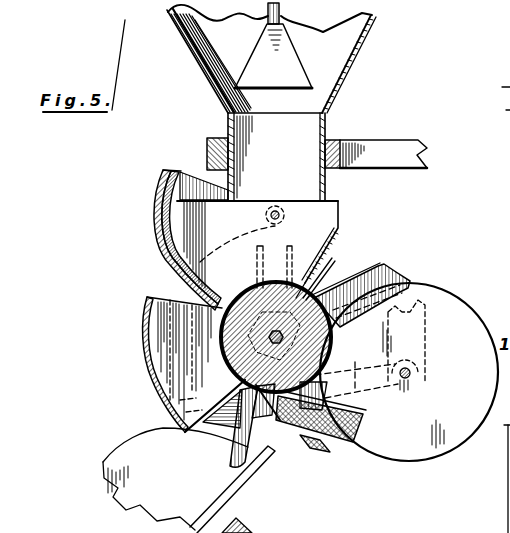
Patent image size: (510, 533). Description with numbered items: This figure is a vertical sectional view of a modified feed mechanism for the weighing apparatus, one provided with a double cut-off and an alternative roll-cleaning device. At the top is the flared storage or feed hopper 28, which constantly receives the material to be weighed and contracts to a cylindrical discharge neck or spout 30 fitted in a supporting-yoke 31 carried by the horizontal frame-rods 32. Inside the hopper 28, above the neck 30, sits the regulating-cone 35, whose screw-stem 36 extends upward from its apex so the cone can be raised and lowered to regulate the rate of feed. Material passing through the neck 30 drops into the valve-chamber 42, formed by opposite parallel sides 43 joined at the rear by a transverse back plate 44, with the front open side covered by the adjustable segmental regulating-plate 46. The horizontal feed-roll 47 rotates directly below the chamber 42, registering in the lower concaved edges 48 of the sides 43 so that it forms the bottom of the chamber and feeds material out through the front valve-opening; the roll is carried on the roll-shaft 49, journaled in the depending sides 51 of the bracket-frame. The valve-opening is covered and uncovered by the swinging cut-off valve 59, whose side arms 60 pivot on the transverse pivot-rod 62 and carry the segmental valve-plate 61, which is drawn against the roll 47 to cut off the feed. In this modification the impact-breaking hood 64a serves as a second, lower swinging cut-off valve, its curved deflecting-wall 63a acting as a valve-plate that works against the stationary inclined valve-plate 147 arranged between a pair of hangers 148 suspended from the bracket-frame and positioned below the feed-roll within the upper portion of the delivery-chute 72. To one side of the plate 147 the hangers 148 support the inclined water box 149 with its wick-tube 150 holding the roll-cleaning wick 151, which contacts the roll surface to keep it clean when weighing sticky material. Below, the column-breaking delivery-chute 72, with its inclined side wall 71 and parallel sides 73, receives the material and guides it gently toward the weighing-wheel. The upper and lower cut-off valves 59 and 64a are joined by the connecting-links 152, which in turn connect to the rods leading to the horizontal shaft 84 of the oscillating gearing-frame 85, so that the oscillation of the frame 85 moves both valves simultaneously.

The flared storage or feed hopper 28 is at (339, 58).
The cylindrical discharge neck or spout 30 is at (276, 156).
The supporting-yoke 31 is at (342, 143).
The frame-rods 32 is at (400, 146).
The regulating-cone 35 is at (273, 56).
The screw-stem 36 is at (279, 14).
The valve-chamber 42 is at (246, 257).
The sides of the valve-chamber 43 is at (320, 222).
The transverse back plate 44 is at (325, 258).
The segmental regulating-plate 46 is at (175, 170).
The feed-roll 47 is at (307, 302).
The lower concaved edges 48 is at (242, 296).
The roll-shaft 49 is at (269, 338).
The depending sides of the skeleton bracket-frame 51 is at (362, 283).
The swinging cut-off valve 59 is at (156, 220).
The side arms of the cut-off valve 60 is at (190, 174).
The segmental valve-plate 61 is at (160, 193).
The transverse pivot-rod 62 is at (278, 211).
The curved deflecting-wall 63a is at (144, 352).
The impact-breaking hood 64a is at (212, 397).
The inclined side wall 71 is at (256, 470).
The adjustable delivery-chute 72 is at (175, 479).
The sides of the delivery-chute 73 is at (118, 487).
The horizontal shaft 84 is at (412, 371).
The oscillating gearing-frame 85 is at (418, 352).
The stationary inclined valve-plate 147 is at (266, 428).
The hangers 148 is at (264, 418).
The water box or chamber 149 is at (333, 437).
The wick-tube 150 is at (363, 426).
The roll-cleaning wick 151 is at (358, 436).
The connecting-links 152 is at (168, 291).